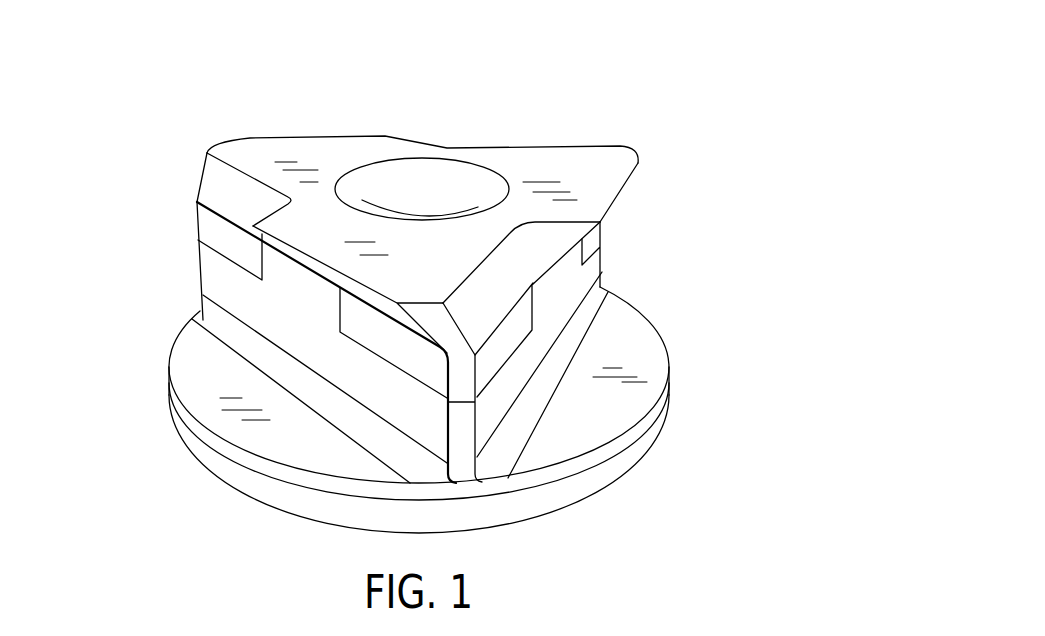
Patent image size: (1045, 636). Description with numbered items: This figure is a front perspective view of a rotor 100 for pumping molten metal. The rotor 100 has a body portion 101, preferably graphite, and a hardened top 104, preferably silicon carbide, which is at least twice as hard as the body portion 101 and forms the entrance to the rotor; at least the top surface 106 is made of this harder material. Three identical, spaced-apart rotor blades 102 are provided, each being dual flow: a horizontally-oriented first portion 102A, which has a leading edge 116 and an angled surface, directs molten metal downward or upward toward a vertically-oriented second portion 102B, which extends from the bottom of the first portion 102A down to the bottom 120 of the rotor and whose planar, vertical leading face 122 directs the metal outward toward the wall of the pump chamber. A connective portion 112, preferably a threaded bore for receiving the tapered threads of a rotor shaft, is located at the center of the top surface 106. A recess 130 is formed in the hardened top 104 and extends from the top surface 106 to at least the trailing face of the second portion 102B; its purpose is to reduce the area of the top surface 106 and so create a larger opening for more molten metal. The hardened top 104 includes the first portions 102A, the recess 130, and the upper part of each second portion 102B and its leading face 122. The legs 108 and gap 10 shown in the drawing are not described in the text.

The rotor 100 is at (663, 76).
The body portion 101 is at (227, 285).
The rotor blade 102 is at (280, 114).
The first portion 102A is at (612, 220).
The second portion 102B is at (278, 362).
The hardened top 104 is at (570, 150).
The top surface 106 is at (393, 143).
The support leg 108 is at (371, 424).
The gap 10 is at (331, 281).
The connective portion 112 is at (453, 195).
The leading edge 116 is at (343, 138).
The bottom 120 is at (607, 398).
The leading face 122 is at (337, 377).
The recess 130 is at (483, 280).